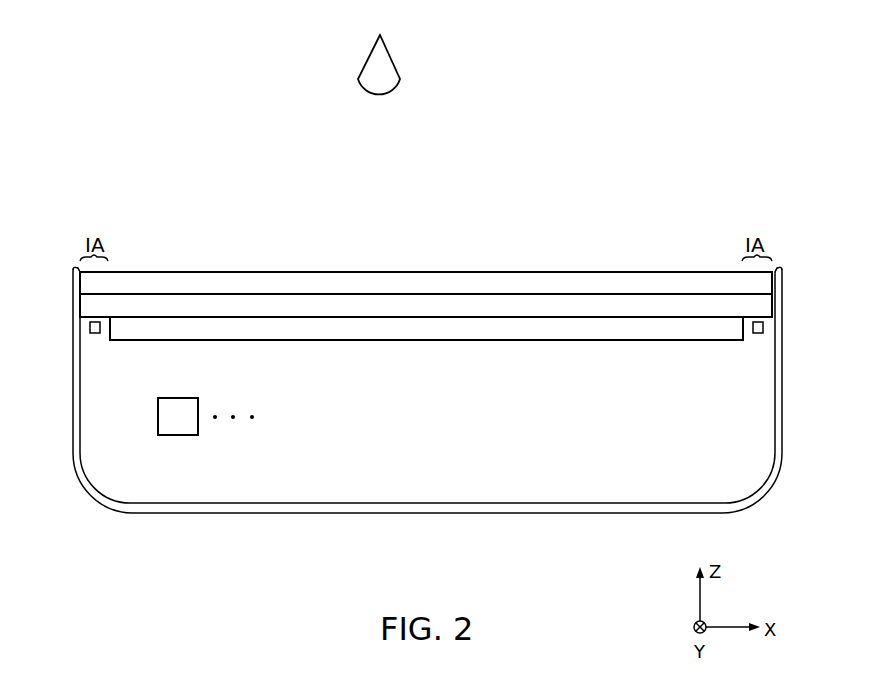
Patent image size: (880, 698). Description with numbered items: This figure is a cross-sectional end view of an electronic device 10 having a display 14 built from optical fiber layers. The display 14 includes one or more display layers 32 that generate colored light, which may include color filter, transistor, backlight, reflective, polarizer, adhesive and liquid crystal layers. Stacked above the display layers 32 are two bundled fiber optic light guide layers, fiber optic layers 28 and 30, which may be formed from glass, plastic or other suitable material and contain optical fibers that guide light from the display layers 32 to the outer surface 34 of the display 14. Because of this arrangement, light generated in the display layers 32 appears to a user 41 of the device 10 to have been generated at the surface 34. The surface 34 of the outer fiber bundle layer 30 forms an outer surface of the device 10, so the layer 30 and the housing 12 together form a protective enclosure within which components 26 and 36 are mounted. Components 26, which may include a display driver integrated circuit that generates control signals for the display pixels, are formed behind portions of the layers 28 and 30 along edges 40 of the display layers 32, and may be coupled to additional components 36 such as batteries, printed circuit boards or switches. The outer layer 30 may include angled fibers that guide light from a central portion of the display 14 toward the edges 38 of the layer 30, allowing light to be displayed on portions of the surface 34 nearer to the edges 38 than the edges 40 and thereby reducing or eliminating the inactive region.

The electronic device 10 is at (519, 130).
The housing 12 is at (73, 408).
The display 14 is at (426, 265).
The components 26 is at (88, 328).
The fiber optic layer 28 is at (617, 307).
The outer fiber bundle layer 30 is at (605, 280).
The display layers 32 is at (426, 291).
The outer surface 34 is at (235, 272).
The component 36 is at (177, 436).
The edges 38 is at (78, 269).
The edges 40 is at (110, 339).
The user 41 is at (392, 60).